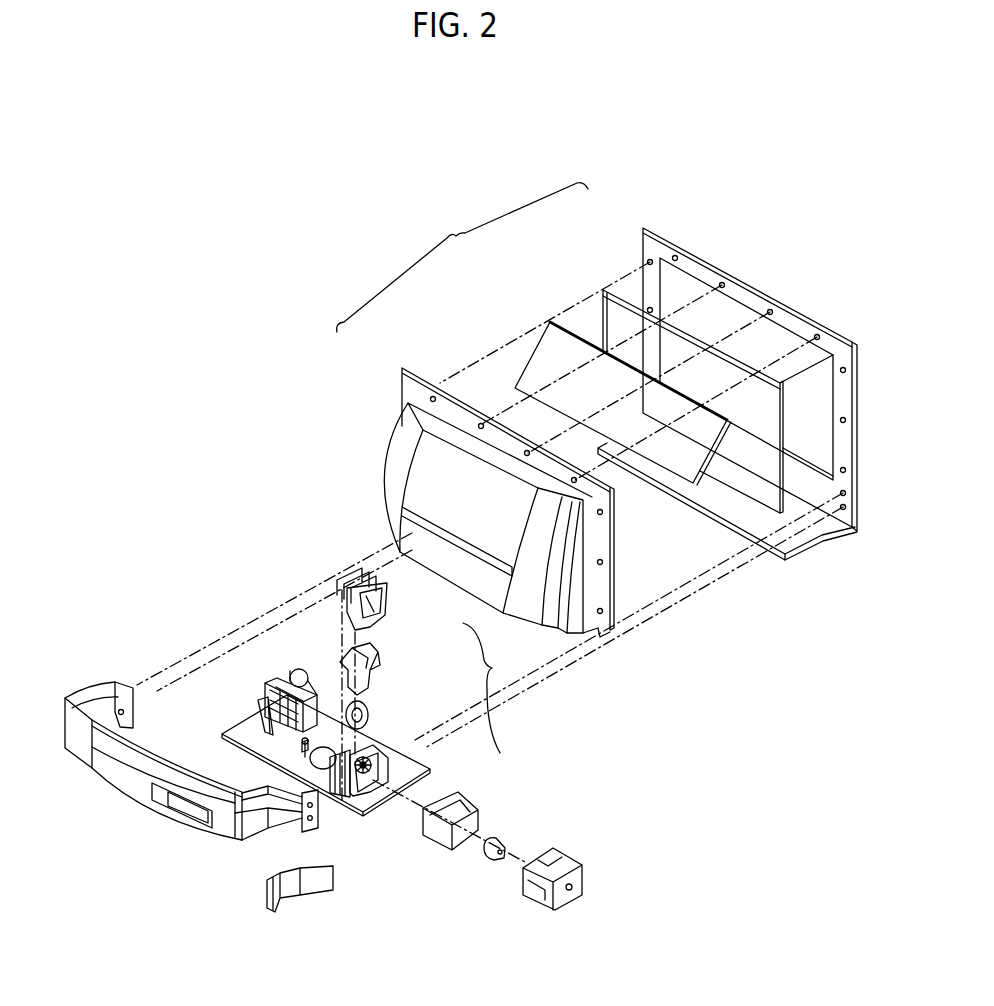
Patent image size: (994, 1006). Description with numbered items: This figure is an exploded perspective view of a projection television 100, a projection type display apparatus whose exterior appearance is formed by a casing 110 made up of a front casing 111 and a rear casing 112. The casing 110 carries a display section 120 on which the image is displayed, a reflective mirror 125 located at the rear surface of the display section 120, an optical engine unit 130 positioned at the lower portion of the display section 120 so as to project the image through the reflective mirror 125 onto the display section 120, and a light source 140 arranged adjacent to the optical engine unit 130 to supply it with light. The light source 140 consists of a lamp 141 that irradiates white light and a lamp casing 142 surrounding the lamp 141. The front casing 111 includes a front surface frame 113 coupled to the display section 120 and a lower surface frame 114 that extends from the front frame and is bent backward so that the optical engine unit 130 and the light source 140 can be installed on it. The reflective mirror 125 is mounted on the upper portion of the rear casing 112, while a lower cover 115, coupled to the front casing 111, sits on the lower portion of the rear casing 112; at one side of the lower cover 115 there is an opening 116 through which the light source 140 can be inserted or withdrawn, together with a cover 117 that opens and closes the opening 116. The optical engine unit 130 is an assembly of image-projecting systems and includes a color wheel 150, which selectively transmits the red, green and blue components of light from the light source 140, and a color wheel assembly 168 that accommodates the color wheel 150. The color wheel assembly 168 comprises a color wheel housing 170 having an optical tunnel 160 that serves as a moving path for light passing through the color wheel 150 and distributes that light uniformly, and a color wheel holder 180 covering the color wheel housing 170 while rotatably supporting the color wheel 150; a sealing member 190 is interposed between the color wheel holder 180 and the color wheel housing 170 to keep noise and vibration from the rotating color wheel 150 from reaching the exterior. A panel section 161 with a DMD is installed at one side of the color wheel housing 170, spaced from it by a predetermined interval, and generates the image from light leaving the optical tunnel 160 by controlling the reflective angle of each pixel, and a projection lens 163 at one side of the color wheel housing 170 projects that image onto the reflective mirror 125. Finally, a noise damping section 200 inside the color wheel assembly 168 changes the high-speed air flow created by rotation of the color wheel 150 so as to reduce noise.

The projection television 100 is at (296, 258).
The casing 110 is at (462, 257).
The front casing 111 is at (637, 232).
The rear casing 112 is at (390, 379).
The front surface frame 113 is at (703, 272).
The lower surface frame 114 is at (832, 530).
The lower cover 115 is at (87, 762).
The opening 116 is at (244, 832).
The cover 117 is at (285, 898).
The display section 120 is at (603, 316).
The reflective mirror 125 is at (547, 345).
The optical engine unit 130 is at (256, 689).
The light source 140 is at (483, 950).
The lamp 141 is at (492, 863).
The lamp casing 142 is at (437, 848).
The color wheel 150 is at (369, 709).
The optical tunnel 160 is at (300, 753).
The panel section 161 is at (257, 718).
The projection lens 163 is at (296, 670).
The color wheel assembly 168 is at (492, 688).
The color wheel housing 170 is at (395, 770).
The color wheel holder 180 is at (389, 611).
The sealing member 190 is at (385, 666).
The noise damping section 200 is at (380, 752).